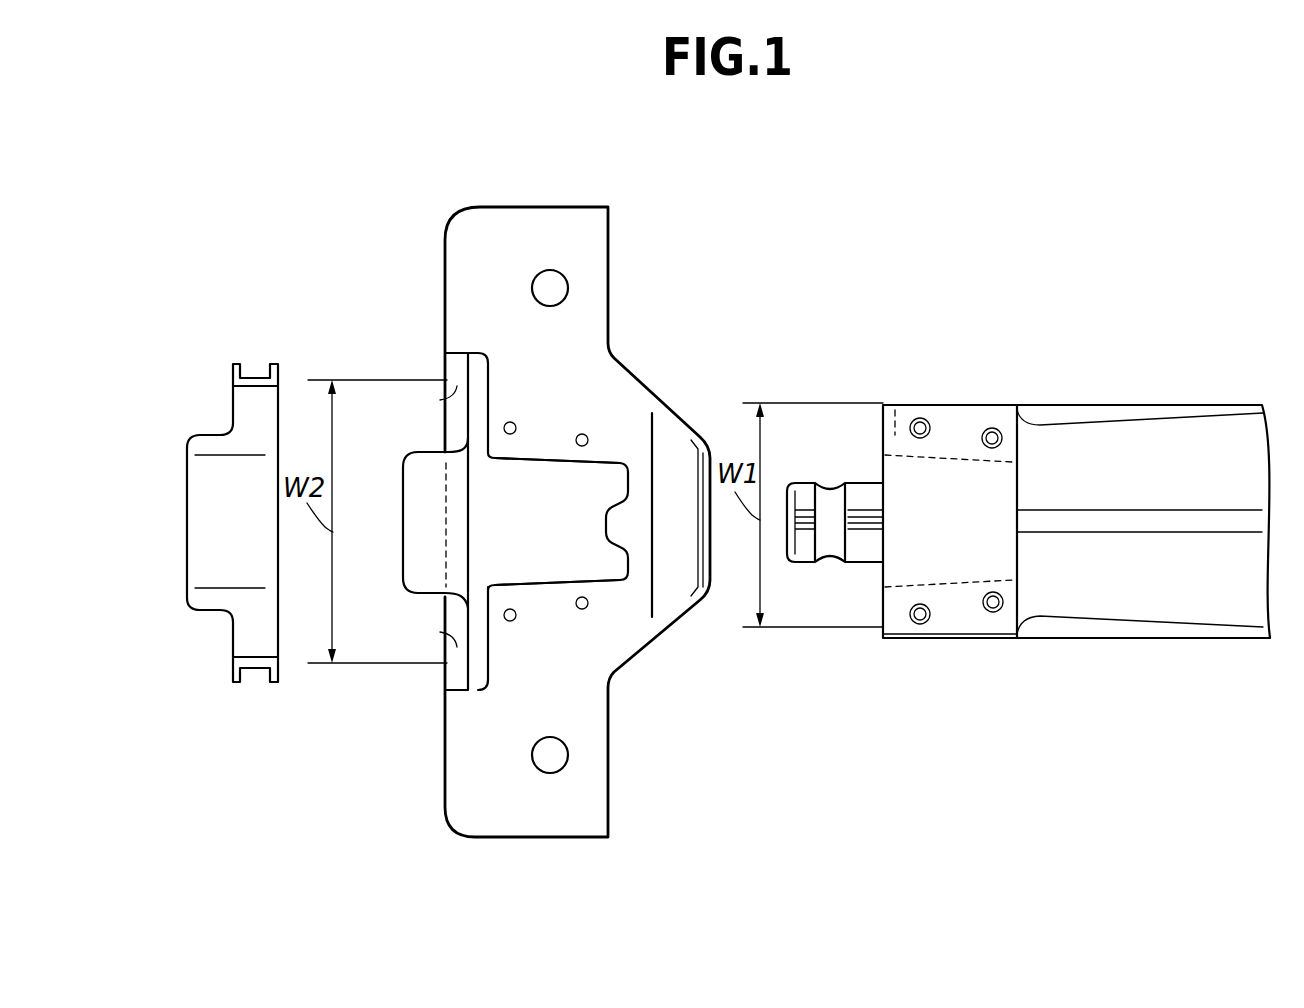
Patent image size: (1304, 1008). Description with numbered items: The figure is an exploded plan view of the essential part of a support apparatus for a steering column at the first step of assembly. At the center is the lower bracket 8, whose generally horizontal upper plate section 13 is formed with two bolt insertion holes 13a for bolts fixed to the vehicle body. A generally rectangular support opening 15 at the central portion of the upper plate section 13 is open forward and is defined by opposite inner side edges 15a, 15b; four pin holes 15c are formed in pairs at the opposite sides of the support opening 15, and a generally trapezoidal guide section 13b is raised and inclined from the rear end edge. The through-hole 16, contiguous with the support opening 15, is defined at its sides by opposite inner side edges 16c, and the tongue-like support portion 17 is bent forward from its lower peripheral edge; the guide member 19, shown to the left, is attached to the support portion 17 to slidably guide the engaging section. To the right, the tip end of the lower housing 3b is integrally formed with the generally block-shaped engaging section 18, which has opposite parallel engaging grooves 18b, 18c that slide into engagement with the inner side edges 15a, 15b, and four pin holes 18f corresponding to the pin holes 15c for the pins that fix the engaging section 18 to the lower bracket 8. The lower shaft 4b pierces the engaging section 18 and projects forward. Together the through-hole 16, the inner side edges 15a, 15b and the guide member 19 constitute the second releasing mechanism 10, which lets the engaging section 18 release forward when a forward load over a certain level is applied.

The lower bracket 8 is at (514, 191).
The upper plate section 13 is at (484, 812).
The bolt insertion hole 13a is at (560, 277).
The guide section 13b is at (688, 437).
The support opening 15 is at (598, 475).
The inner side edge 15a is at (547, 456).
The inner side edge 15b is at (546, 590).
The pin hole 15c is at (510, 420).
The through-hole 16 is at (445, 437).
The inner side edge 16c is at (440, 400).
The support portion 17 is at (408, 518).
The guide member 19 is at (223, 362).
The second releasing mechanism 10 is at (938, 372).
The engaging section 18 is at (974, 382).
The engaging groove 18b is at (958, 607).
The engaging groove 18c is at (888, 401).
The pin hole 18f is at (922, 417).
The lower shaft 4b is at (868, 545).
The lower housing 3b is at (1185, 443).